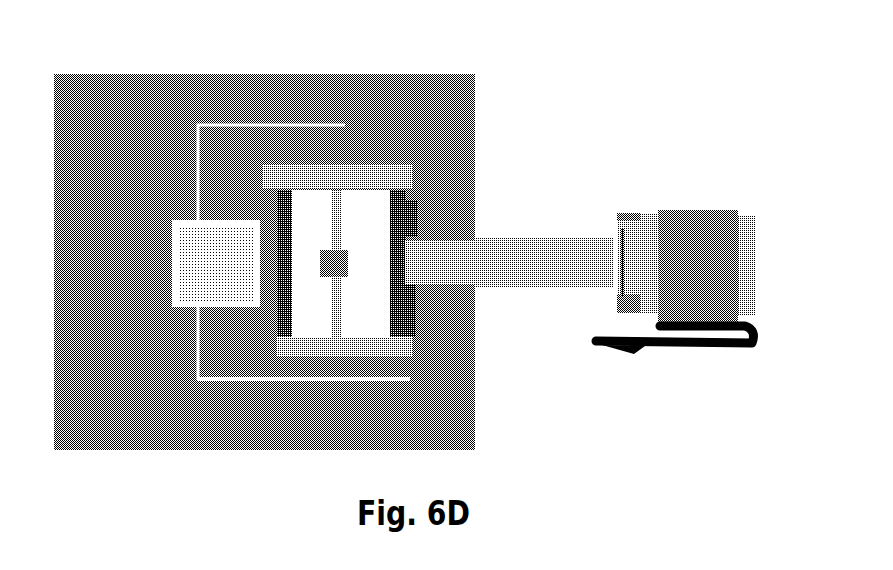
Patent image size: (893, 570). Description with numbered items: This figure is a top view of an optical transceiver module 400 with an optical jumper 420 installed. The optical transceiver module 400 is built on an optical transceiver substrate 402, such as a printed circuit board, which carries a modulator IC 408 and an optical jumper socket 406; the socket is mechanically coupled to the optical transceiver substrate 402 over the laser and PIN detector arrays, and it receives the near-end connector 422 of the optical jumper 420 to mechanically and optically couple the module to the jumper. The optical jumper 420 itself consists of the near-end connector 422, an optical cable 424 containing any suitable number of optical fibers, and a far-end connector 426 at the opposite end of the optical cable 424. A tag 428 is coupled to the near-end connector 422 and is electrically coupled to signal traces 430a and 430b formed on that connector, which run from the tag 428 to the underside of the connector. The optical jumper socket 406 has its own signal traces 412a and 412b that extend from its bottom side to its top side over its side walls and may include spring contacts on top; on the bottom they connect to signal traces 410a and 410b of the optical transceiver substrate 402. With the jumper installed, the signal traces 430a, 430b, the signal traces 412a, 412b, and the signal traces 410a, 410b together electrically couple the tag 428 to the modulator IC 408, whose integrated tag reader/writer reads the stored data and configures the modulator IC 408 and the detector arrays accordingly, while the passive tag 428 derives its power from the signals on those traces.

The optical transceiver module 400 is at (404, 255).
The optical transceiver substrate 402 is at (476, 427).
The optical jumper socket 406 is at (400, 178).
The modulator IC 408 is at (203, 258).
The signal trace 410a is at (262, 123).
The signal trace 410b is at (257, 382).
The signal trace 412a is at (337, 178).
The signal trace 412b is at (337, 343).
The optical jumper 420 is at (509, 259).
The near-end connector 422 is at (408, 305).
The optical cable 424 is at (556, 287).
The far-end connector 426 is at (700, 208).
The tag 428 is at (332, 263).
The signal trace 430a is at (337, 207).
The signal trace 430b is at (337, 313).